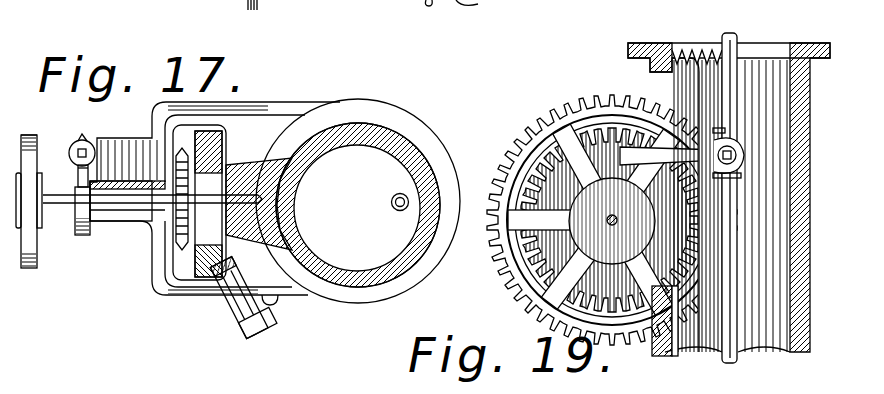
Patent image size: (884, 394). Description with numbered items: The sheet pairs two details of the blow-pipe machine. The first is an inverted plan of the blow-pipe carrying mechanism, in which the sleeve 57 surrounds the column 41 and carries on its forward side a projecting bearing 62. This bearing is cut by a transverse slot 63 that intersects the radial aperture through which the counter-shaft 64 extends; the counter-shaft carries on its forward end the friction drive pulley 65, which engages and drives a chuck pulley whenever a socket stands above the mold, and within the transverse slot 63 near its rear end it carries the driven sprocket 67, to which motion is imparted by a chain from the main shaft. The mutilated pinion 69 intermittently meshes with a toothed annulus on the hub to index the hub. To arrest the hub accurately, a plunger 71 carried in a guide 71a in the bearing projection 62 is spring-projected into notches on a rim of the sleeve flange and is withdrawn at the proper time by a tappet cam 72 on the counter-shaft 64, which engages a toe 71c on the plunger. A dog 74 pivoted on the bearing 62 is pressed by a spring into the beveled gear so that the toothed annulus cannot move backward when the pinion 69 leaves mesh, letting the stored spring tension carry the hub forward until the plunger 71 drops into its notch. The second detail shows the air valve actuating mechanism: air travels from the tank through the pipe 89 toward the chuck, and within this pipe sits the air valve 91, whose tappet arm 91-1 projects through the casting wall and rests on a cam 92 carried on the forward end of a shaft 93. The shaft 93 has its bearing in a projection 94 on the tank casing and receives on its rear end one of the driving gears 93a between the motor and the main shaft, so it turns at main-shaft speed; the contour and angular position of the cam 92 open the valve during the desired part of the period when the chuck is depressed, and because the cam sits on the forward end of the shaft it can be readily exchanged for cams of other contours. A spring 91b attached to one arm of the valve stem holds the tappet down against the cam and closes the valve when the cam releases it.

In FIG. 17, the sleeve 57 is at (335, 292).
In FIG. 17, the column 41 is at (330, 266).
In FIG. 17, the pipe 89 is at (391, 204).
In FIG. 19, the pipe 89 is at (728, 238).
In FIG. 17, the transverse slot 63 is at (182, 262).
In FIG. 17, the driven sprocket 67 is at (177, 153).
In FIG. 17, the pinion 69 is at (212, 140).
In FIG. 17, the projecting bearing 62 is at (125, 213).
In FIG. 17, the counter-shaft 64 is at (60, 208).
In FIG. 17, the tappet cam 72 is at (85, 238).
In FIG. 17, the guide 71a is at (72, 154).
In FIG. 17, the plunger 71 is at (88, 143).
In FIG. 17, the toe 71c is at (78, 173).
In FIG. 17, the friction drive pulley 65 is at (33, 136).
In FIG. 17, the dog 74 is at (240, 310).
In FIG. 19, the driving gear 93a is at (505, 153).
In FIG. 19, the cam 92 is at (586, 191).
In FIG. 19, the projection 94 is at (648, 165).
In FIG. 19, the shaft 93 is at (612, 221).
In FIG. 19, the spring 91b is at (703, 47).
In FIG. 19, the air valve 91 is at (742, 140).
In FIG. 19, the tappet arm 91-1 is at (738, 163).